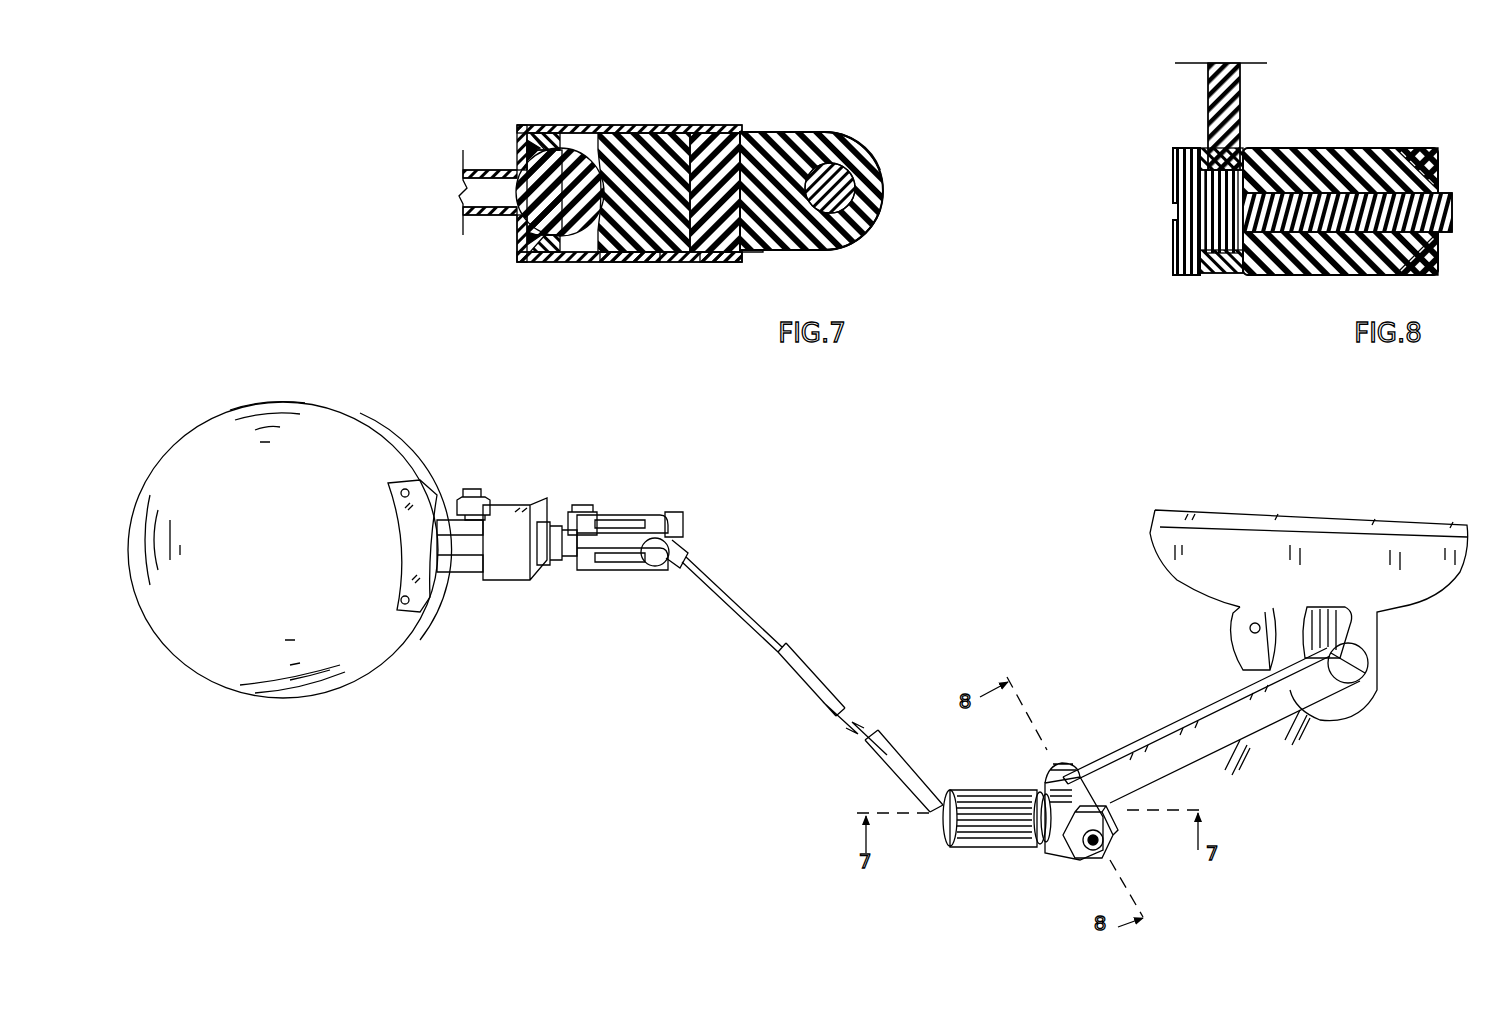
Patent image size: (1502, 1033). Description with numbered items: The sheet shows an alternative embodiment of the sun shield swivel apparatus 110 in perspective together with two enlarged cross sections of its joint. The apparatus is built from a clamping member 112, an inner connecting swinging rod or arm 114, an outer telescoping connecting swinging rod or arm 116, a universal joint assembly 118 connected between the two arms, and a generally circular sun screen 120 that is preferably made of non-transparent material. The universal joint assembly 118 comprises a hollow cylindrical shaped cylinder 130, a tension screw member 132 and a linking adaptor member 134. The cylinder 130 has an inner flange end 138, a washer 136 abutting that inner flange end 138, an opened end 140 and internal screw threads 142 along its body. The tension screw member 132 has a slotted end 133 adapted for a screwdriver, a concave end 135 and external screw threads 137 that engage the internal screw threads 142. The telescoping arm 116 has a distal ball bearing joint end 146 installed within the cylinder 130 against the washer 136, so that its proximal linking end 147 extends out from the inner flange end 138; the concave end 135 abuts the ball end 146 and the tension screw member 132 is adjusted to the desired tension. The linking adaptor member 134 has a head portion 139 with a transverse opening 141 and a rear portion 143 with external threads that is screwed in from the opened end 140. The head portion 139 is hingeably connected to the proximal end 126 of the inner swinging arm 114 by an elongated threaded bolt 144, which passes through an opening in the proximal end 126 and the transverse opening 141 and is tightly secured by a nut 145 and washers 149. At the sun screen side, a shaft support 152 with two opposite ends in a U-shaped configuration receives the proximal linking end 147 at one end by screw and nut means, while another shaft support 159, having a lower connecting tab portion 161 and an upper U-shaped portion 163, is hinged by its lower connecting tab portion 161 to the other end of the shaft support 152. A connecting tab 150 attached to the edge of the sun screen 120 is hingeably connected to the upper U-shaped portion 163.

In FIG. 6, the sun shield swivel apparatus 110 is at (1277, 815).
In FIG. 6, the clamping member 112 is at (1410, 612).
In FIG. 8, the inner connecting swinging rod or arm 114 is at (1206, 111).
In FIG. 6, the inner connecting swinging rod or arm 114 is at (1152, 728).
In FIG. 6, the outer telescoping connecting swinging rod or arm 116 is at (832, 684).
In FIG. 7, the universal joint assembly 118 is at (817, 66).
In FIG. 6, the universal joint assembly 118 is at (1000, 850).
In FIG. 6, the sun screen 120 is at (347, 686).
In FIG. 8, the proximal end 126 is at (1230, 272).
In FIG. 6, the proximal end 126 is at (1110, 806).
In FIG. 7, the hollow cylindrical shaped cylinder 130 is at (635, 264).
In FIG. 7, the tension screw member 132 is at (625, 146).
In FIG. 7, the slotted end 133 is at (675, 132).
In FIG. 7, the linking adaptor member 134 is at (877, 151).
In FIG. 7, the concave end 135 is at (590, 146).
In FIG. 7, the washer 136 is at (520, 248).
In FIG. 7, the external screw threads 137 is at (612, 263).
In FIG. 7, the inner flange end 138 is at (515, 162).
In FIG. 7, the head portion 139 is at (832, 131).
In FIG. 8, the head portion 139 is at (1320, 149).
In FIG. 7, the opened end 140 is at (740, 253).
In FIG. 7, the transverse opening 141 is at (862, 234).
In FIG. 7, the internal screw threads 142 is at (560, 126).
In FIG. 7, the rear portion 143 is at (725, 257).
In FIG. 7, the elongated threaded bolt 144 is at (858, 172).
In FIG. 8, the elongated threaded bolt 144 is at (1168, 280).
In FIG. 6, the elongated threaded bolt 144 is at (1058, 762).
In FIG. 8, the nut 145 is at (1410, 149).
In FIG. 6, the nut 145 is at (1115, 832).
In FIG. 7, the distal ball bearing joint end 146 is at (515, 226).
In FIG. 6, the proximal linking end 147 is at (686, 545).
In FIG. 8, the washers 149 is at (1203, 274).
In FIG. 6, the connecting tab 150 is at (445, 542).
In FIG. 6, the shaft support 152 is at (630, 510).
In FIG. 6, the shaft support 159 is at (505, 500).
In FIG. 6, the lower connecting tab portion 161 is at (563, 547).
In FIG. 6, the upper U-shaped portion 163 is at (505, 567).